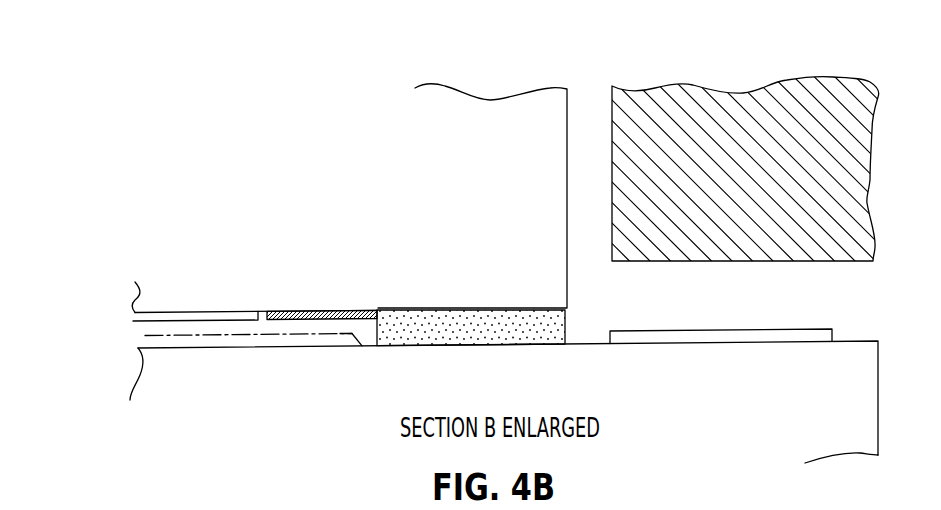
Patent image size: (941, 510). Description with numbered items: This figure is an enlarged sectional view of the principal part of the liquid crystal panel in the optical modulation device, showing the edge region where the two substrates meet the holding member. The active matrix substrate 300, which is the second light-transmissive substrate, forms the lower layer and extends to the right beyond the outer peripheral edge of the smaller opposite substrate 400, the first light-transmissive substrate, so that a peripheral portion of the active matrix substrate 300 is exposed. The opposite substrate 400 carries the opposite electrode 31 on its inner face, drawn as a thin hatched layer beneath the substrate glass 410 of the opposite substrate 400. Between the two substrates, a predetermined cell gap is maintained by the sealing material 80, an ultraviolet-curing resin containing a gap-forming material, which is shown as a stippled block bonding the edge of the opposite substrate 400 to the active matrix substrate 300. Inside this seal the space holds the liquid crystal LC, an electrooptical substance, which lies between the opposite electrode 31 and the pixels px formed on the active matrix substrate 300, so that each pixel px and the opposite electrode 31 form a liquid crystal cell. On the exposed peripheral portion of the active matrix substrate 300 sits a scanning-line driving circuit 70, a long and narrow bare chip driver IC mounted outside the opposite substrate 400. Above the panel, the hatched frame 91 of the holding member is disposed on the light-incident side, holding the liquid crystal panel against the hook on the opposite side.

The opposite substrate 400 is at (520, 128).
The frame 91 is at (720, 112).
The upper glass plate 410 is at (148, 318).
The opposite electrode 31 is at (318, 310).
The liquid crystal LC is at (152, 330).
The pixel px is at (143, 338).
The sealing material 80 is at (557, 329).
The scanning-line driving circuit 70 is at (752, 333).
The active matrix substrate 300 is at (867, 411).